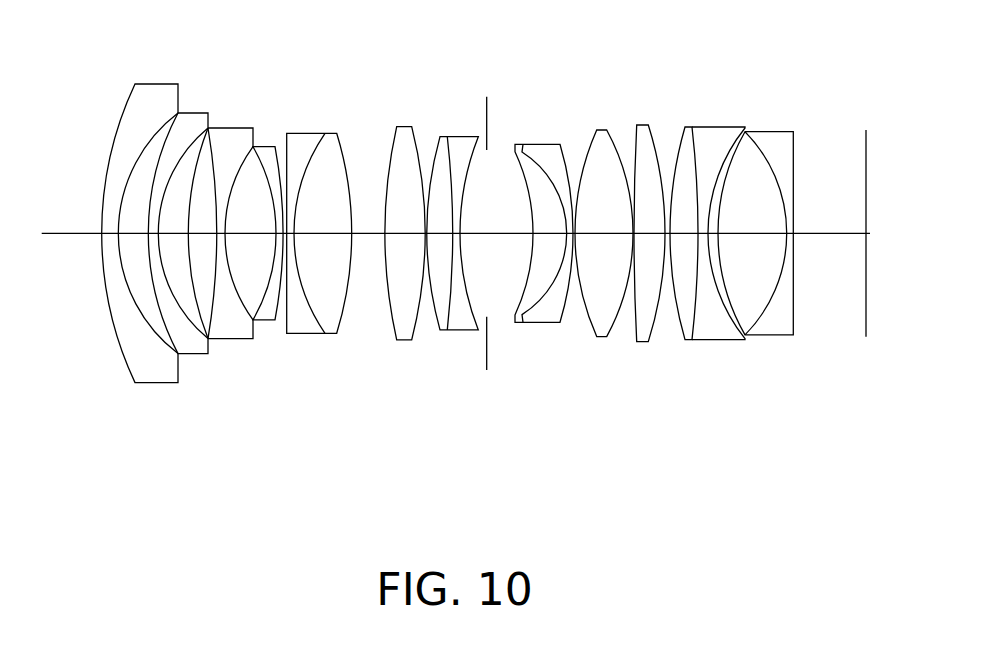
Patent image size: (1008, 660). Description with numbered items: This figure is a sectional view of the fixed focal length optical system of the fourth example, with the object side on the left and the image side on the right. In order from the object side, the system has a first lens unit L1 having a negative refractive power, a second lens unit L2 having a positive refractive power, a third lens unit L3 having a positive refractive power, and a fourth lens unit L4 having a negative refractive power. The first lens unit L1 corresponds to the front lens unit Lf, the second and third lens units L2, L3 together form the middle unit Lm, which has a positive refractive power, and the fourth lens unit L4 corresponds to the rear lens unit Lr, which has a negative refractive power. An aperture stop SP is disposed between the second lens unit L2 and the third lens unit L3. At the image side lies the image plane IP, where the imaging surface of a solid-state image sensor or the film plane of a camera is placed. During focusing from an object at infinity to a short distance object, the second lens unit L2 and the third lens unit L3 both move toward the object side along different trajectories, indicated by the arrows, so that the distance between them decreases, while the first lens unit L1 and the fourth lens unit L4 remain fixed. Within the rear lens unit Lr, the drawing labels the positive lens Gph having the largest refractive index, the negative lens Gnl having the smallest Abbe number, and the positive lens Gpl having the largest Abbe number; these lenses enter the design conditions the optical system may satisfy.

The first lens unit L1 is at (228, 280).
The front lens unit Lf is at (105, 378).
The second lens unit L2 is at (380, 378).
The third lens unit L3 is at (591, 302).
The middle unit Lm is at (523, 293).
The fourth lens unit L4 is at (719, 253).
The rear lens unit Lr is at (719, 253).
The aperture stop SP is at (472, 107).
The image plane IP is at (864, 120).
The positive lens having the largest refractive index Gph is at (682, 148).
The negative lens having the smallest Abbe number Gnl is at (710, 140).
The positive lens having the largest Abbe number Gpl is at (747, 160).